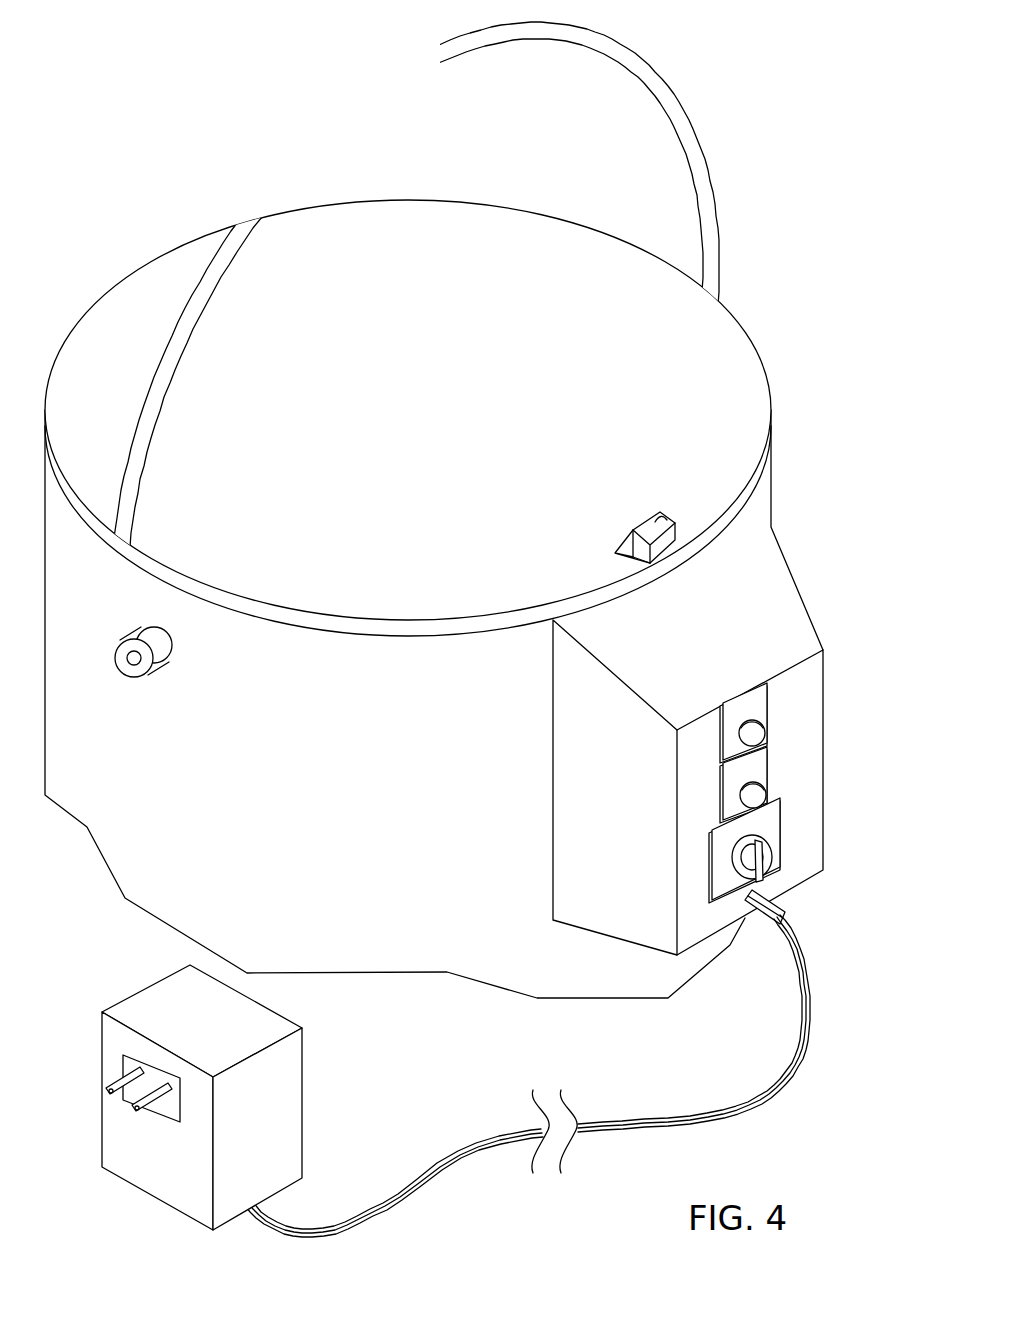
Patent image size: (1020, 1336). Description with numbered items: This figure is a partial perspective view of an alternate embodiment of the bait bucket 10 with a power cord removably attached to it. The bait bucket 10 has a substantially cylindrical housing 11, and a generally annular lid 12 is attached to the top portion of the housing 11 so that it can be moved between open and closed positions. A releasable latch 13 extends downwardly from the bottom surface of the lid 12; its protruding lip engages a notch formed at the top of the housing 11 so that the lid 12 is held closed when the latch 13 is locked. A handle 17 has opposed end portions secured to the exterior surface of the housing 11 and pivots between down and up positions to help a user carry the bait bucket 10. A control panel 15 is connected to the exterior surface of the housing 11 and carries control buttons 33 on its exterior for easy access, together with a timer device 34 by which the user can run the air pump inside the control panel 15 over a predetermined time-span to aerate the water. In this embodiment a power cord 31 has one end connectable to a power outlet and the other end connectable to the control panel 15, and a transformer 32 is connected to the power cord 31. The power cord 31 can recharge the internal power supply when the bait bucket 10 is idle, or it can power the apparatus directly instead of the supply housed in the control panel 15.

The bait bucket 10 is at (775, 288).
The housing 11 is at (772, 489).
The lid 12 is at (441, 414).
The latch 13 is at (663, 520).
The control panel 15 is at (706, 699).
The handle 17 is at (657, 79).
The power cord 31 is at (787, 1046).
The transformer 32 is at (283, 1098).
The push buttons 33 is at (758, 718).
The timer device 34 is at (773, 830).